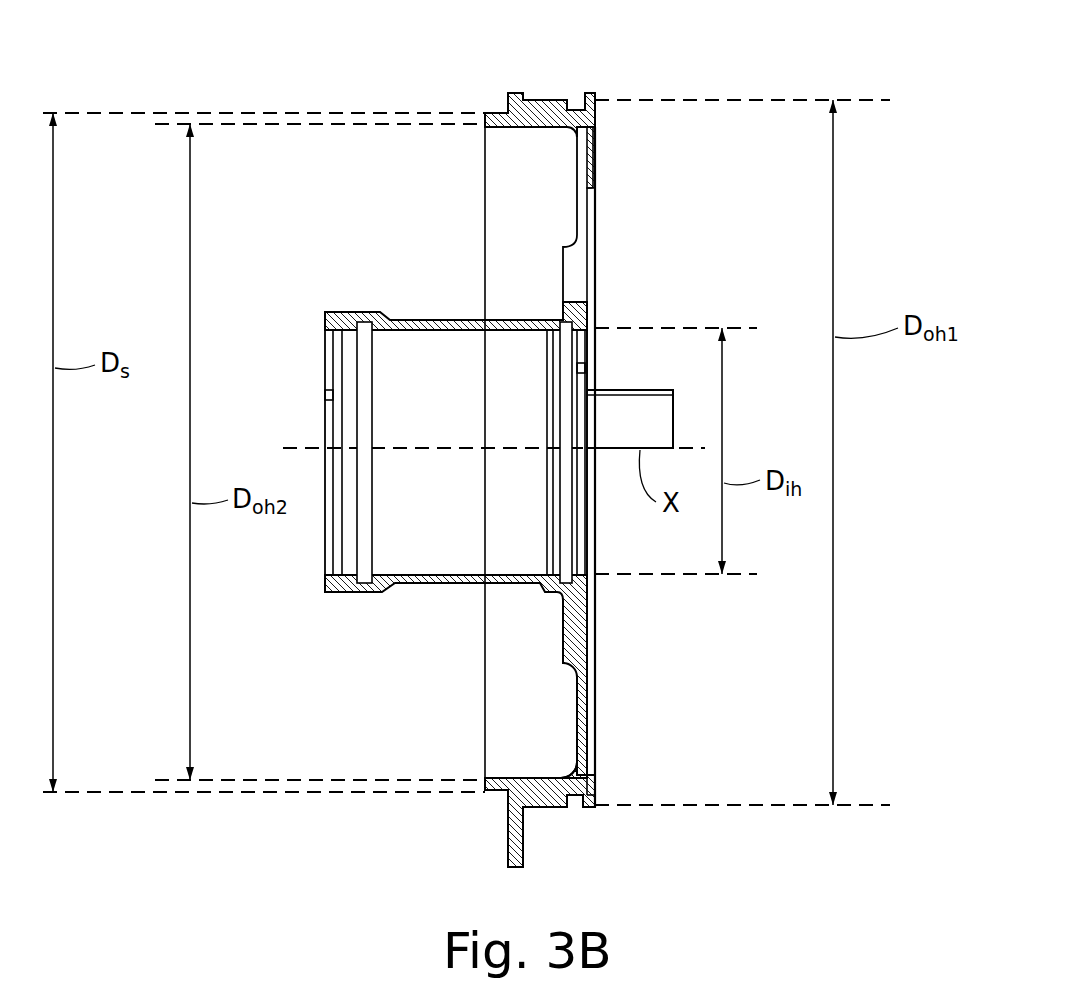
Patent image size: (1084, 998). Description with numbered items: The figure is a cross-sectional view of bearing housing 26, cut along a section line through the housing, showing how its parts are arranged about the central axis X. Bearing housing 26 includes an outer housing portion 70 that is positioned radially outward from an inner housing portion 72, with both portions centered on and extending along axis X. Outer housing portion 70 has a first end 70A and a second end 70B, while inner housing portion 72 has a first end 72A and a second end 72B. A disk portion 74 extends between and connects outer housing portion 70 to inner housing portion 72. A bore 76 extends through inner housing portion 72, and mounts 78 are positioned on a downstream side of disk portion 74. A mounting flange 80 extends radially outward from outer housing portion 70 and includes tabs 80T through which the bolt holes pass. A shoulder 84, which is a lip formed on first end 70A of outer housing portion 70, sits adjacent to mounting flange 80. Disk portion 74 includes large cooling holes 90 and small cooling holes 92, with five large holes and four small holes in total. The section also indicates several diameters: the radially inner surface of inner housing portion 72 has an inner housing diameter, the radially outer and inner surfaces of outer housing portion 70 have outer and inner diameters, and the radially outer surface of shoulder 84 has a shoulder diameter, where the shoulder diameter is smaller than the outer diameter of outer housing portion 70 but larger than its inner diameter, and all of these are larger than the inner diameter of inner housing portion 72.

The bearing housing 26 is at (276, 96).
The outer housing portion 70 is at (545, 108).
The first end 70A is at (485, 115).
The second end 70B is at (595, 115).
The inner housing portion 72 is at (408, 320).
The first end 72A is at (325, 330).
The second end 72B is at (590, 312).
The disk portion 74 is at (596, 648).
The bore 76 is at (435, 553).
The mounts 78 is at (630, 412).
The mounting flange 80 is at (520, 823).
The tabs 80T is at (520, 857).
The shoulder 84 is at (500, 112).
The large cooling holes 90 is at (596, 167).
The small cooling holes 92 is at (596, 732).